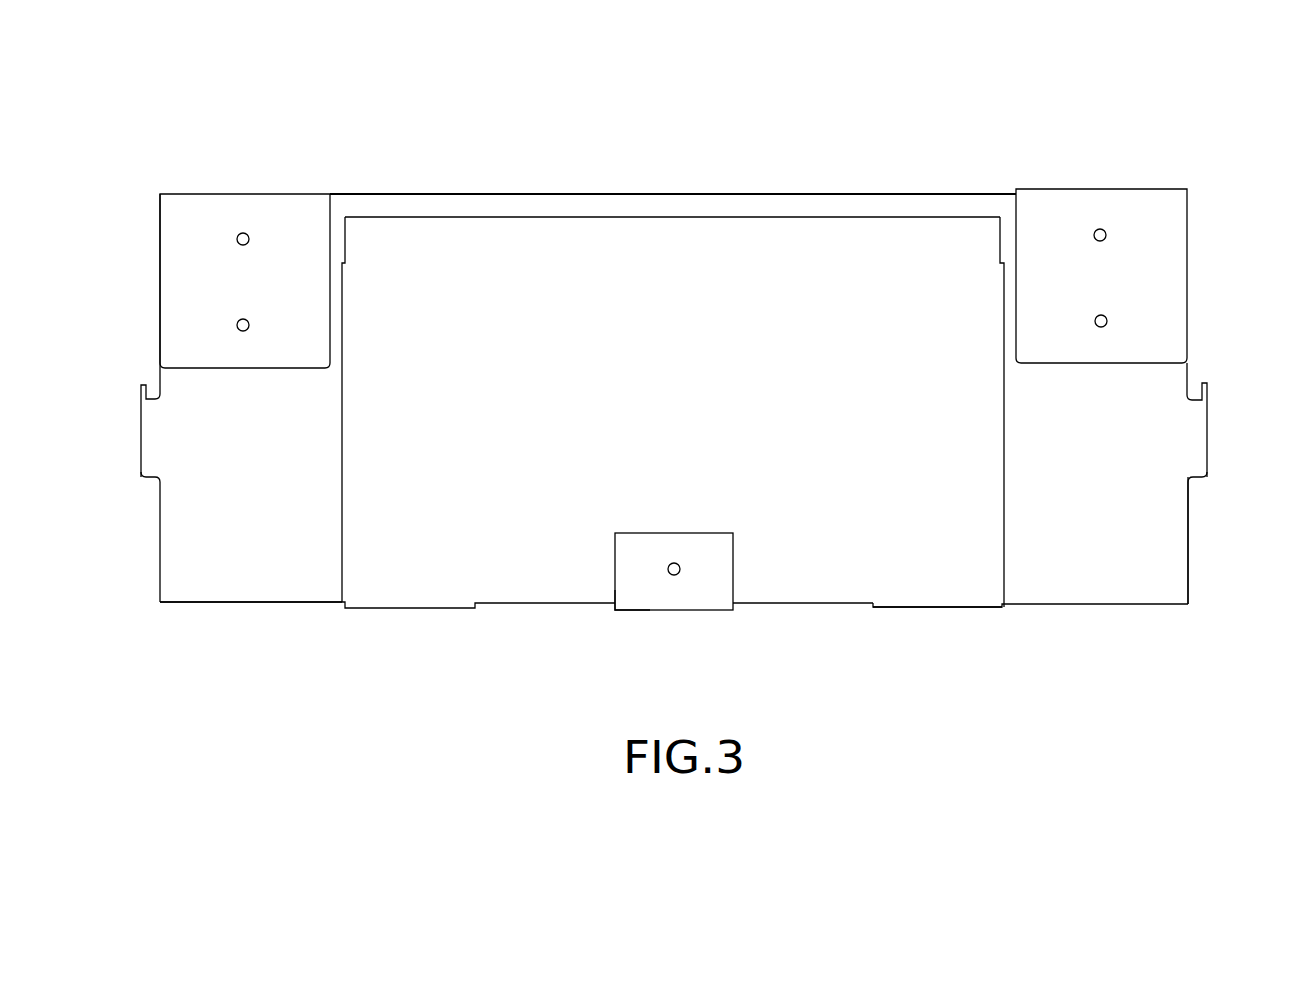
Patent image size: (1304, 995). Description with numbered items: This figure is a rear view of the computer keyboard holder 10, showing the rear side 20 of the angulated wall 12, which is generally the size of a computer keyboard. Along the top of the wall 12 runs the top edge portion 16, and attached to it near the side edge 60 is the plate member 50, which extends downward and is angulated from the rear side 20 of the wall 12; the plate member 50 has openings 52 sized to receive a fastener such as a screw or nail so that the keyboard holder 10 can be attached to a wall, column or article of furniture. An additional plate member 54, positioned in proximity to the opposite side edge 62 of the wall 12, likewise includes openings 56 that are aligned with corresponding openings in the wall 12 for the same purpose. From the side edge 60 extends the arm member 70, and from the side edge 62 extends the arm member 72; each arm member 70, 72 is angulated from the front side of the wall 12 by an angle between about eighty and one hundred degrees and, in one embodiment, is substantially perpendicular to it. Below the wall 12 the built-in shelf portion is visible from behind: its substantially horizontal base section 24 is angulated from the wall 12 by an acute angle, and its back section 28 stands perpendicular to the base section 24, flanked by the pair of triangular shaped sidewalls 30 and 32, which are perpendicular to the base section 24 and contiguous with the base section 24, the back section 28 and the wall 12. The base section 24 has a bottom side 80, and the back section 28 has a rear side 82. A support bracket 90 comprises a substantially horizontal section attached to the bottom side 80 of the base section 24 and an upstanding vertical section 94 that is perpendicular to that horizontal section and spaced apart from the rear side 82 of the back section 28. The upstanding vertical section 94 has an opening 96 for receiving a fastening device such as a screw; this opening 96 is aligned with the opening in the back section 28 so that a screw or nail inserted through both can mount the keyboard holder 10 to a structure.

The computer keyboard holder 10 is at (802, 142).
The wall 12 is at (200, 543).
The top edge portion 16 is at (508, 194).
The rear side 20 is at (245, 573).
The base section 24 is at (860, 607).
The back section 28 is at (900, 531).
The triangular shaped sidewall 30 is at (1004, 478).
The triangular shaped sidewall 32 is at (342, 478).
The plate member 50 is at (1150, 255).
The opening 52 is at (1101, 229).
The plate member 54 is at (190, 247).
The opening 56 is at (243, 233).
The side edge 60 is at (1189, 500).
The side edge 62 is at (160, 515).
The arm member 70 is at (1208, 410).
The arm member 72 is at (150, 431).
The bottom side 80 is at (778, 607).
The rear side 82 is at (443, 553).
The support bracket 90 is at (640, 588).
The upstanding vertical section 94 is at (718, 562).
The opening 96 is at (674, 562).